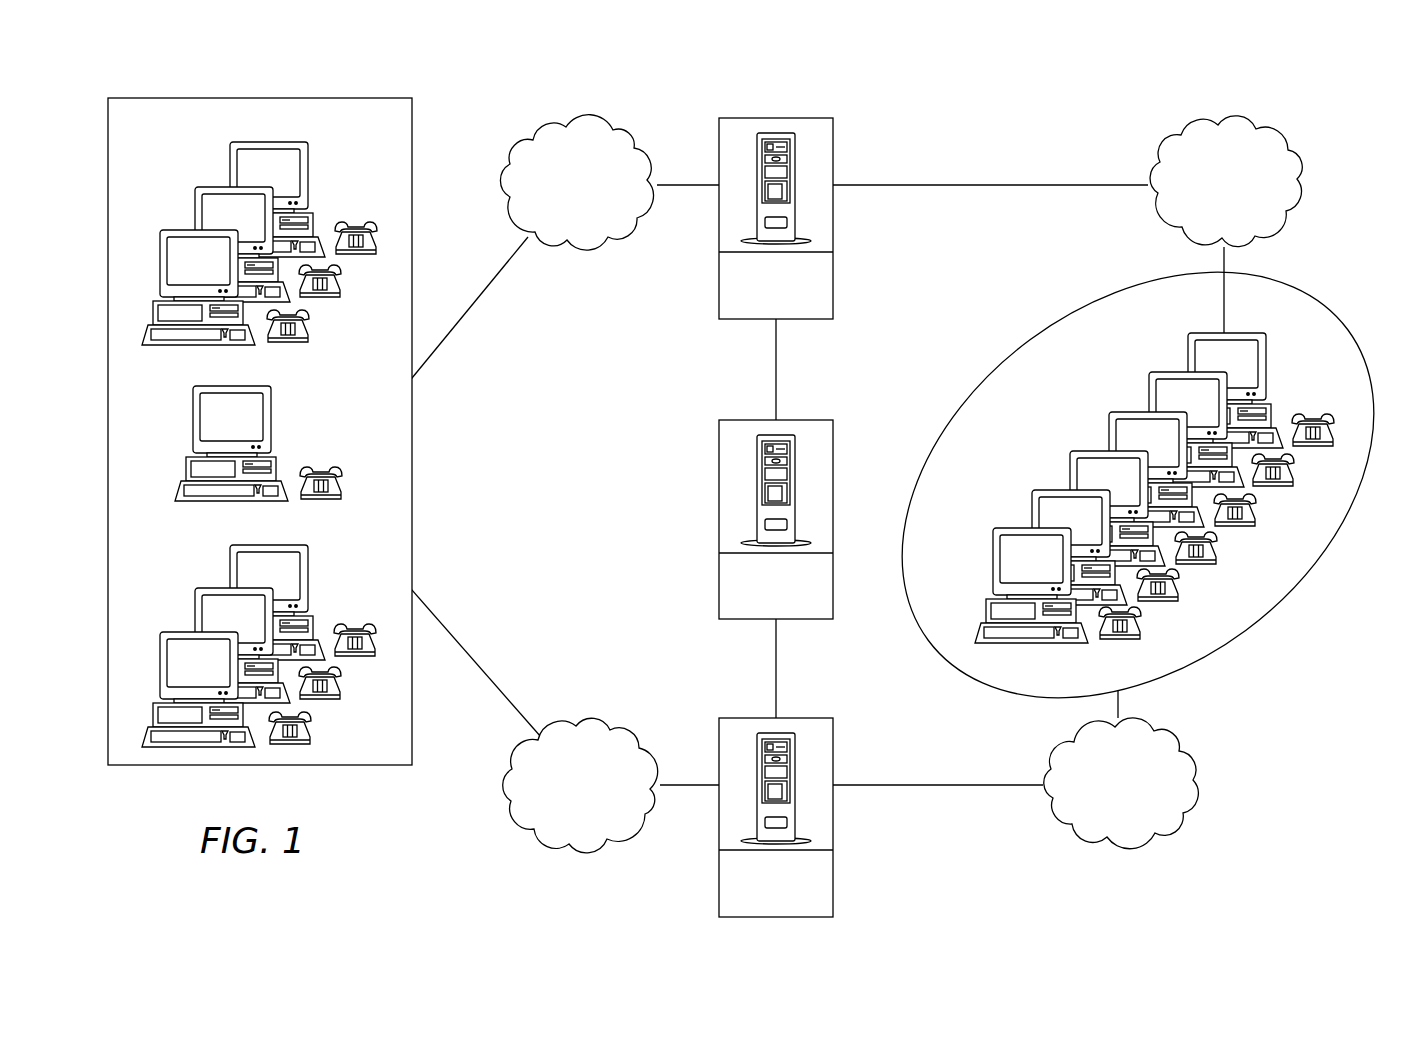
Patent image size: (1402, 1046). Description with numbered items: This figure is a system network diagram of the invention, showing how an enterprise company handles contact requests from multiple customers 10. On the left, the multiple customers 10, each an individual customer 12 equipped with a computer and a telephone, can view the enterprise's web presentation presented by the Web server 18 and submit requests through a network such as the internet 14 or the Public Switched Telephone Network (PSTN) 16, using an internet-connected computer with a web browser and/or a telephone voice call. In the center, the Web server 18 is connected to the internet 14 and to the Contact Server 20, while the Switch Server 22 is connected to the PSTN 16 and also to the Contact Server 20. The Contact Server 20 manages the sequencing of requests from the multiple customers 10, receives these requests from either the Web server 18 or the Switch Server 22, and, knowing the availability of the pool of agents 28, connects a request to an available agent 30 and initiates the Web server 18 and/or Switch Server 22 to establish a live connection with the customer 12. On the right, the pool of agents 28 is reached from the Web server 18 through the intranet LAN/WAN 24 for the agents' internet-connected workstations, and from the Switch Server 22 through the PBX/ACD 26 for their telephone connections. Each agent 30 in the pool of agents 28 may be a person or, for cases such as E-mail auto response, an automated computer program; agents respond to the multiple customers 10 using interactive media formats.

The multiple customers 10 is at (260, 404).
The customer 12 is at (158, 192).
The internet 14 is at (568, 118).
The Public Switched Telephone Network (PSTN) 16 is at (558, 852).
The Web server 18 is at (757, 118).
The Contact Server 20 is at (757, 420).
The Switch Server 22 is at (757, 718).
The intranet LAN/WAN 24 is at (1252, 119).
The PBX/ACD 26 is at (1130, 848).
The pool of agents 28 is at (1111, 484).
The agent 30 is at (1288, 378).